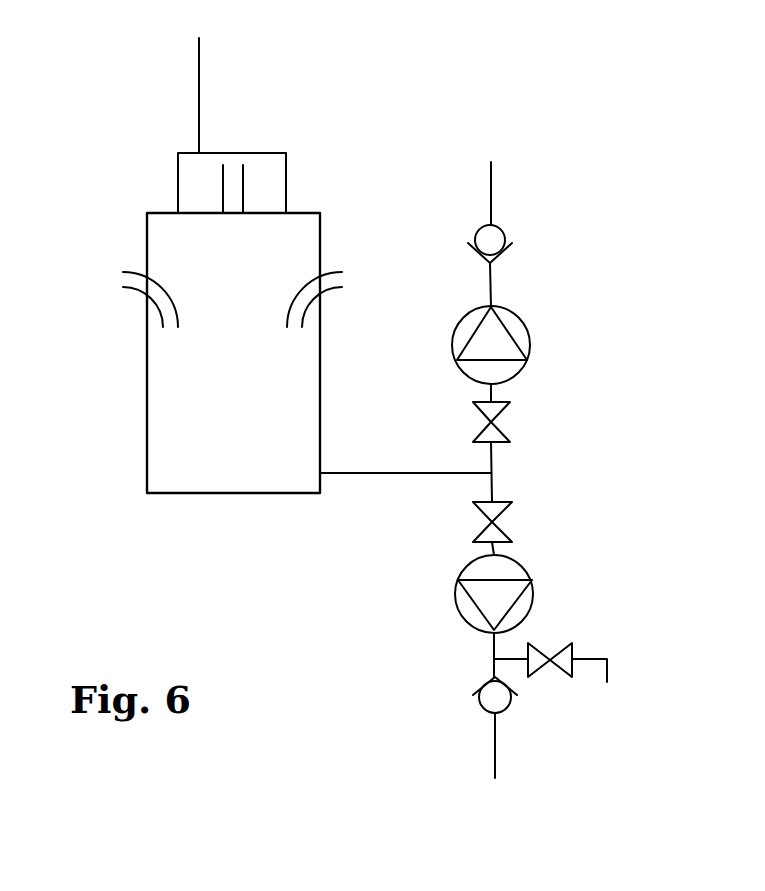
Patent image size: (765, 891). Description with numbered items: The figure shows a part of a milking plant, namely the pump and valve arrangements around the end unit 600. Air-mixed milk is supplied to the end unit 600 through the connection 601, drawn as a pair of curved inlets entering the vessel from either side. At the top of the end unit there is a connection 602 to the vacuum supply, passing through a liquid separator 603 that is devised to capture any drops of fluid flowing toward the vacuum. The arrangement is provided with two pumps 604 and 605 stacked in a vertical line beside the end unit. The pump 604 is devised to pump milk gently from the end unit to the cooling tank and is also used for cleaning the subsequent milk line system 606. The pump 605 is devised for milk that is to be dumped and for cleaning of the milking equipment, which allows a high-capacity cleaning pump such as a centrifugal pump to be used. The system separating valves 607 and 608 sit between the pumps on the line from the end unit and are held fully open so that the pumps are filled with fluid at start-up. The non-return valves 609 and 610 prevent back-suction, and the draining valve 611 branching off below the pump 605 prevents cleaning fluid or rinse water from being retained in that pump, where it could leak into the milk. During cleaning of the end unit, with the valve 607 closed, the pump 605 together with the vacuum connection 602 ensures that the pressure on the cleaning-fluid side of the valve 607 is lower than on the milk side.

The end unit 600 is at (260, 443).
The connection 601 is at (121, 270).
The connection to the vacuum supply 602 is at (199, 77).
The liquid separator 603 is at (261, 160).
The pump 604 is at (520, 331).
The pump 605 is at (457, 588).
The milk line system 606 is at (488, 173).
The system separating valve 607 is at (498, 424).
The system separating valve 608 is at (504, 522).
The non-return valve 609 is at (506, 223).
The non-return valve 610 is at (473, 702).
The draining valve 611 is at (567, 633).